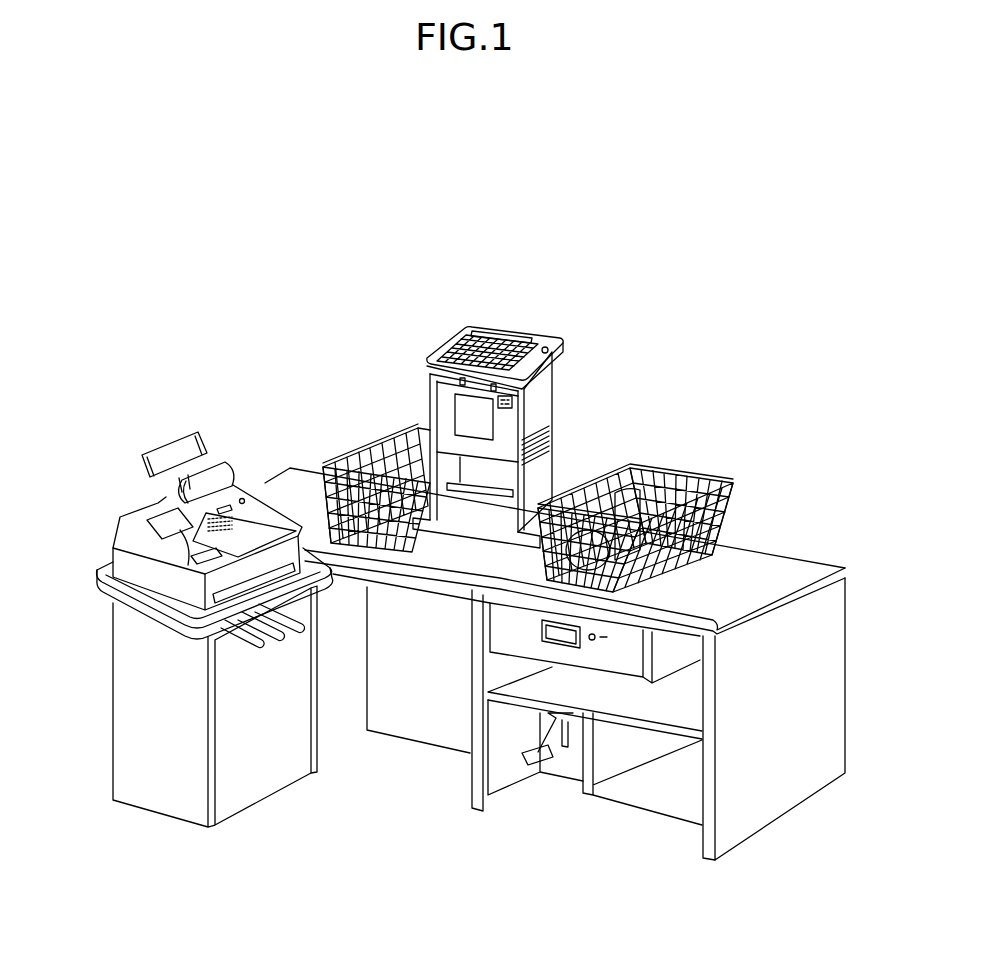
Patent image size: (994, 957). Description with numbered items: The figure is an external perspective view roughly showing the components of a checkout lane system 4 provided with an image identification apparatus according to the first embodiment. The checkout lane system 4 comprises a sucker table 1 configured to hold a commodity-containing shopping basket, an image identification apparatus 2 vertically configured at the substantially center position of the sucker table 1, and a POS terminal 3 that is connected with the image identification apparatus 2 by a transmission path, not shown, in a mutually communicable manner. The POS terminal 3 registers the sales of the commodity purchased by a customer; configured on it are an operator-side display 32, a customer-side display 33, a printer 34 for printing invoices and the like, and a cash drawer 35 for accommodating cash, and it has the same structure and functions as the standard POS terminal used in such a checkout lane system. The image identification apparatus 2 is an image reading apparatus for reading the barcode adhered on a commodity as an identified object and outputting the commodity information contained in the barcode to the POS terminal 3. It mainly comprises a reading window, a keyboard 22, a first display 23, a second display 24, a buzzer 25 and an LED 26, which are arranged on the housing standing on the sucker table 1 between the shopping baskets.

The sucker table 1 is at (832, 600).
The image identification apparatus 2 is at (498, 411).
The POS terminal 3 is at (195, 593).
The checkout lane system 4 is at (696, 306).
The keyboard 22 is at (433, 353).
The first display 23 is at (563, 370).
The second display 24 is at (482, 337).
The buzzer 25 is at (514, 406).
The LED 26 is at (545, 347).
The operator-side display 32 is at (220, 481).
The customer-side display 33 is at (190, 432).
The printer 34 is at (182, 576).
The cash drawer 35 is at (232, 592).